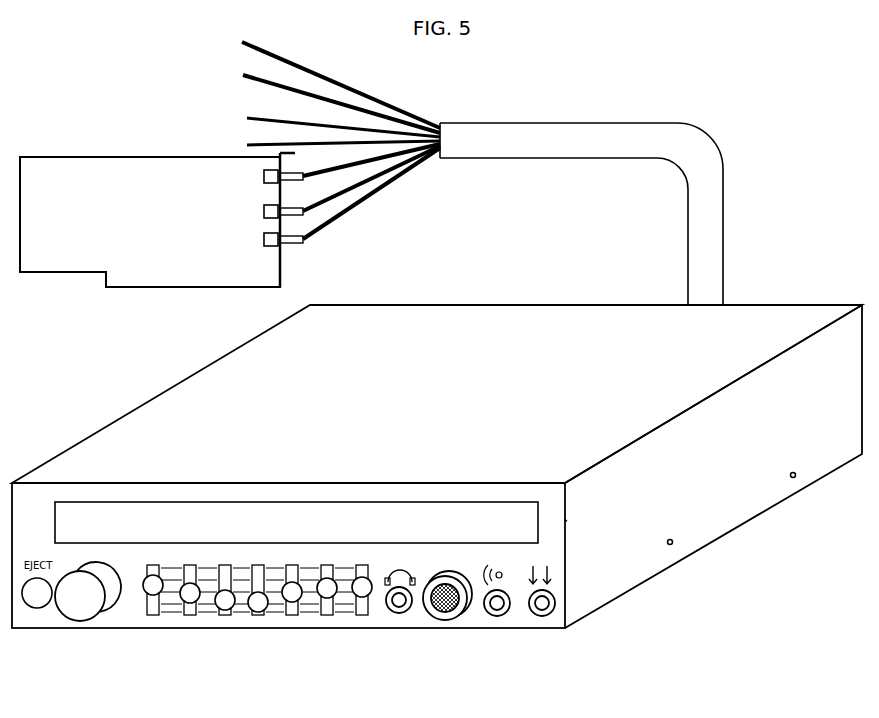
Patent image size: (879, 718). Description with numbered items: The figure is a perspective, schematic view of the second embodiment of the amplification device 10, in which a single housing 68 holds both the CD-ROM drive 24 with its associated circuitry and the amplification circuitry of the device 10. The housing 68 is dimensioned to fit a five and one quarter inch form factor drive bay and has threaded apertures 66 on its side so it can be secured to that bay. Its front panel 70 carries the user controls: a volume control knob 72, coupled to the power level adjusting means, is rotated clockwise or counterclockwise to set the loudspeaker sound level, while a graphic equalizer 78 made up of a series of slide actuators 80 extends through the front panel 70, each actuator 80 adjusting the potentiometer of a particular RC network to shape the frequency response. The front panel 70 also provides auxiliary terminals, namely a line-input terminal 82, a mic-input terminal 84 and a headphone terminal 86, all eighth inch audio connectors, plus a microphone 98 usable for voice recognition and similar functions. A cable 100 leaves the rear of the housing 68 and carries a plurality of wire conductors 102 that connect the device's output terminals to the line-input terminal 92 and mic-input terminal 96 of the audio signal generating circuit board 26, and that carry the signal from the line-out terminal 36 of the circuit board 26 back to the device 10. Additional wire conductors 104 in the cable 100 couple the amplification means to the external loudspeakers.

The amplification device 10 is at (185, 368).
The CD-ROM drive 24 is at (190, 522).
The audio signal generating circuit board 26 is at (168, 150).
The line-out terminal 36 is at (262, 239).
The threaded apertures 66 is at (685, 542).
The housing 68 is at (556, 318).
The front panel 70 is at (565, 520).
The volume control knob 72 is at (77, 626).
The graphic equalizer means 78 is at (247, 571).
The slide actuators 80 is at (362, 577).
The line-input terminal 82 is at (546, 620).
The mic-input terminal 84 is at (500, 620).
The headphone terminal 86 is at (400, 618).
The line-input terminal of the audio circuitry 92 is at (262, 176).
The mic-input terminal of the audio circuitry 96 is at (262, 210).
The microphone 98 is at (452, 620).
The cable 100 is at (500, 138).
The wire conductors 102 is at (332, 173).
The wire conductors 104 is at (233, 43).